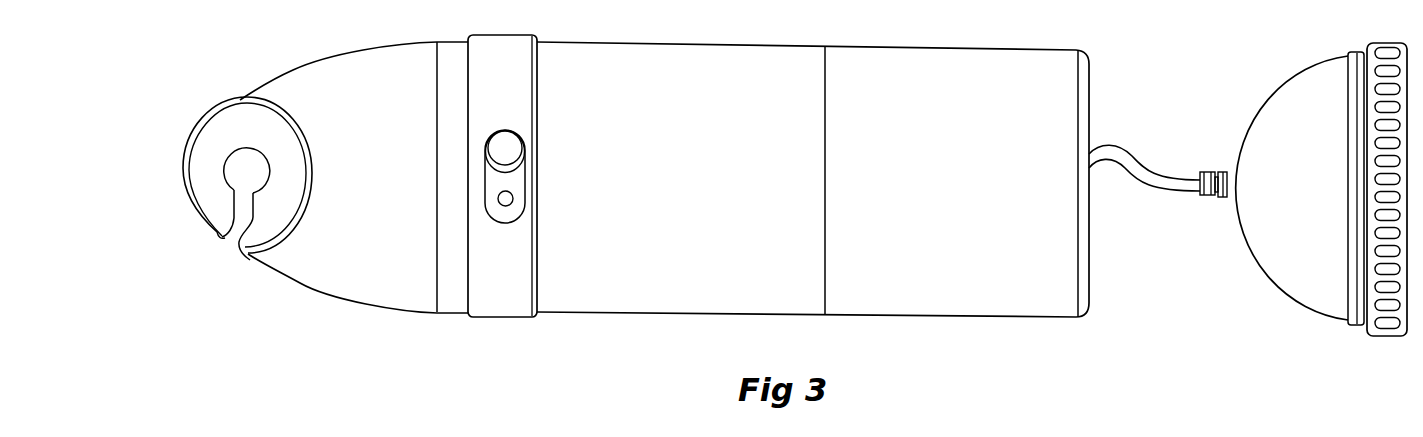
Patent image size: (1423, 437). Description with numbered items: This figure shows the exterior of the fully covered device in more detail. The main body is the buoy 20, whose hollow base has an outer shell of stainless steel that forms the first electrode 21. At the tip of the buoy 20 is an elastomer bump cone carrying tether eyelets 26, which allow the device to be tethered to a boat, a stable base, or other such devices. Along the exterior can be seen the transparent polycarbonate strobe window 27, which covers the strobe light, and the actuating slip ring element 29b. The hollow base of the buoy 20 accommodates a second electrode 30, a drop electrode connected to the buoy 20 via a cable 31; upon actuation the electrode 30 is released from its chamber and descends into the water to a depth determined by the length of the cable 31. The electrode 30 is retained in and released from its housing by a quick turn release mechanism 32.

The buoy 20 is at (1093, 63).
The first electrode 21 is at (985, 293).
The tether eyelets 26 is at (236, 167).
The strobe window 27 is at (442, 293).
The actuating slip ring element 29b is at (487, 297).
The second electrode 30 is at (1270, 293).
The cable 31 is at (1137, 148).
The quick turn release mechanism 32 is at (1370, 338).